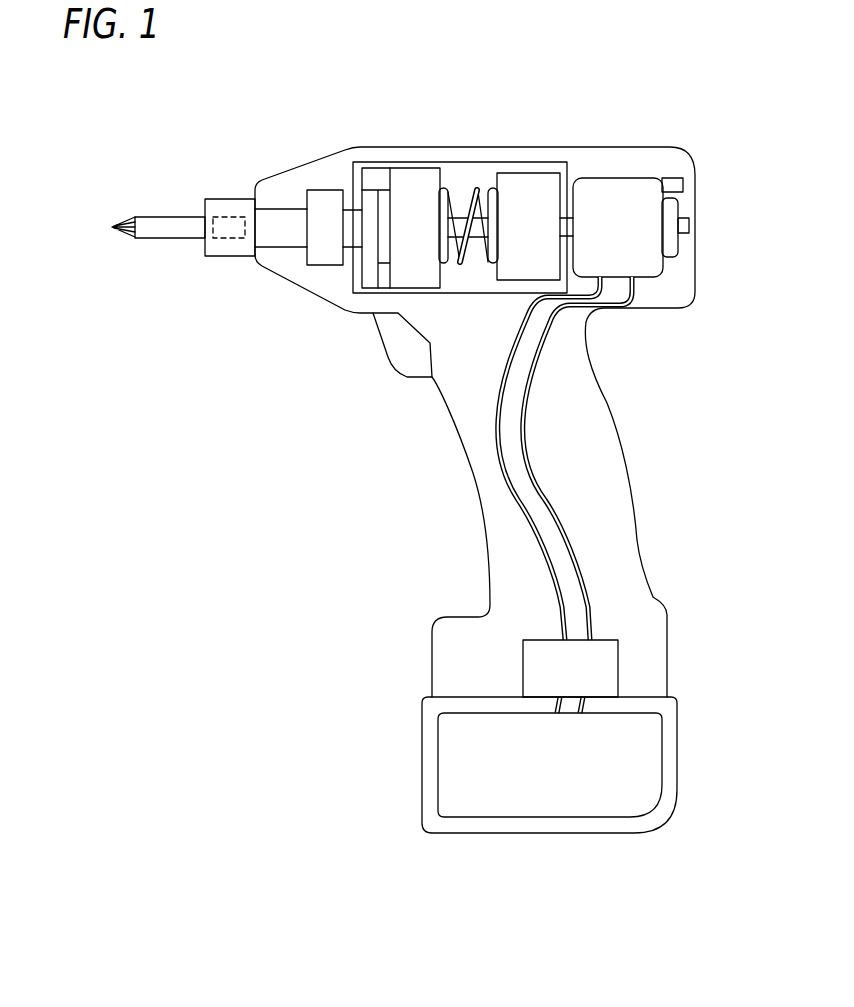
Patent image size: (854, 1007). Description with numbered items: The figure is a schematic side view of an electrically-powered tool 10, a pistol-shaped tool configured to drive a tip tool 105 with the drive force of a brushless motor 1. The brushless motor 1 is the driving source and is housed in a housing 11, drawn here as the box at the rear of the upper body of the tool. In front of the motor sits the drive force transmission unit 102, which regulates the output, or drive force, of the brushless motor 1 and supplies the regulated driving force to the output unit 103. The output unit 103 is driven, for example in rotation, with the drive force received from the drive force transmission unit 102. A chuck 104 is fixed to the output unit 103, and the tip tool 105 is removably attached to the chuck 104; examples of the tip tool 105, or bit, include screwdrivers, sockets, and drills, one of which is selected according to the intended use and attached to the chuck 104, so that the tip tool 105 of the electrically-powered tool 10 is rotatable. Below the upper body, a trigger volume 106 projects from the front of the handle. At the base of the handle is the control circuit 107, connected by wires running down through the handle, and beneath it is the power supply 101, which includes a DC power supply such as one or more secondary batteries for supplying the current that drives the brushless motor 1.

The electrically-powered tool 10 is at (178, 125).
The brushless motor 1 is at (521, 190).
The housing 11 is at (627, 190).
The power supply 101 is at (638, 758).
The drive force transmission unit 102 is at (468, 162).
The output unit 103 is at (285, 237).
The chuck 104 is at (230, 202).
The tip tool 105 is at (165, 223).
The trigger volume 106 is at (400, 343).
The control circuit 107 is at (610, 668).